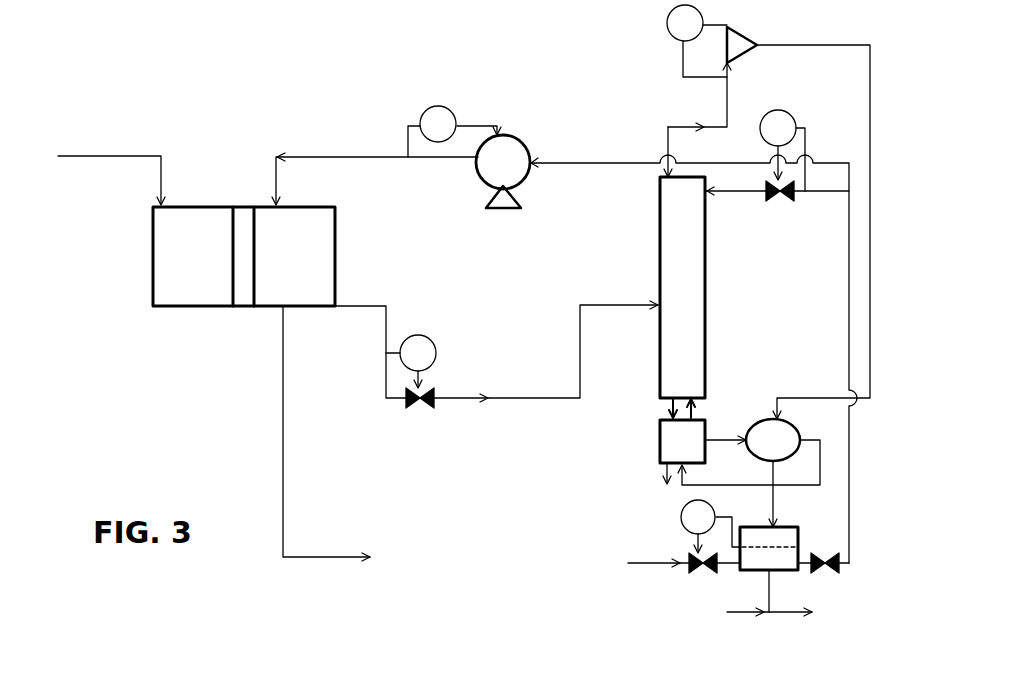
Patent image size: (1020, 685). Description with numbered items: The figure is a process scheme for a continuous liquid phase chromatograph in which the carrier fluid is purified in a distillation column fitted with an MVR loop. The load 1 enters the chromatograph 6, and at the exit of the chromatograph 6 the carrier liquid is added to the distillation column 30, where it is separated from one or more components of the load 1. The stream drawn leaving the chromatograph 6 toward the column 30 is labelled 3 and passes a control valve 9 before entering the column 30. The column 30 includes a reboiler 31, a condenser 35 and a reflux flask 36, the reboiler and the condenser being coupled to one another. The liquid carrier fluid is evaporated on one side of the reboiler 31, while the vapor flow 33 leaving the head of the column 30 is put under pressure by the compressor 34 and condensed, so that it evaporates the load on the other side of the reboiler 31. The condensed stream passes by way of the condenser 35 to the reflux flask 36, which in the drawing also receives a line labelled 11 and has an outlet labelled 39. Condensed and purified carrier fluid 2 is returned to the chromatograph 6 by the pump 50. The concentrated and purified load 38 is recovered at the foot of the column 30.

The load 1 is at (131, 160).
The condensed and purified carrier fluid 2 is at (357, 157).
The product line from unit 6 3 is at (355, 300).
The chromatograph 6 is at (200, 292).
The pressure control valve 9 is at (420, 410).
The inlet line to level-controlled vessel 11 is at (660, 565).
The distillation column 30 is at (670, 247).
The reboiler 31 is at (668, 452).
The vapor flow 33 is at (727, 115).
The compressor 34 is at (735, 35).
The condenser 35 is at (770, 420).
The reflux flask 36 is at (795, 560).
The concentrated and purified load 38 is at (662, 478).
The outlet line 39 is at (755, 614).
The pump 50 is at (530, 162).